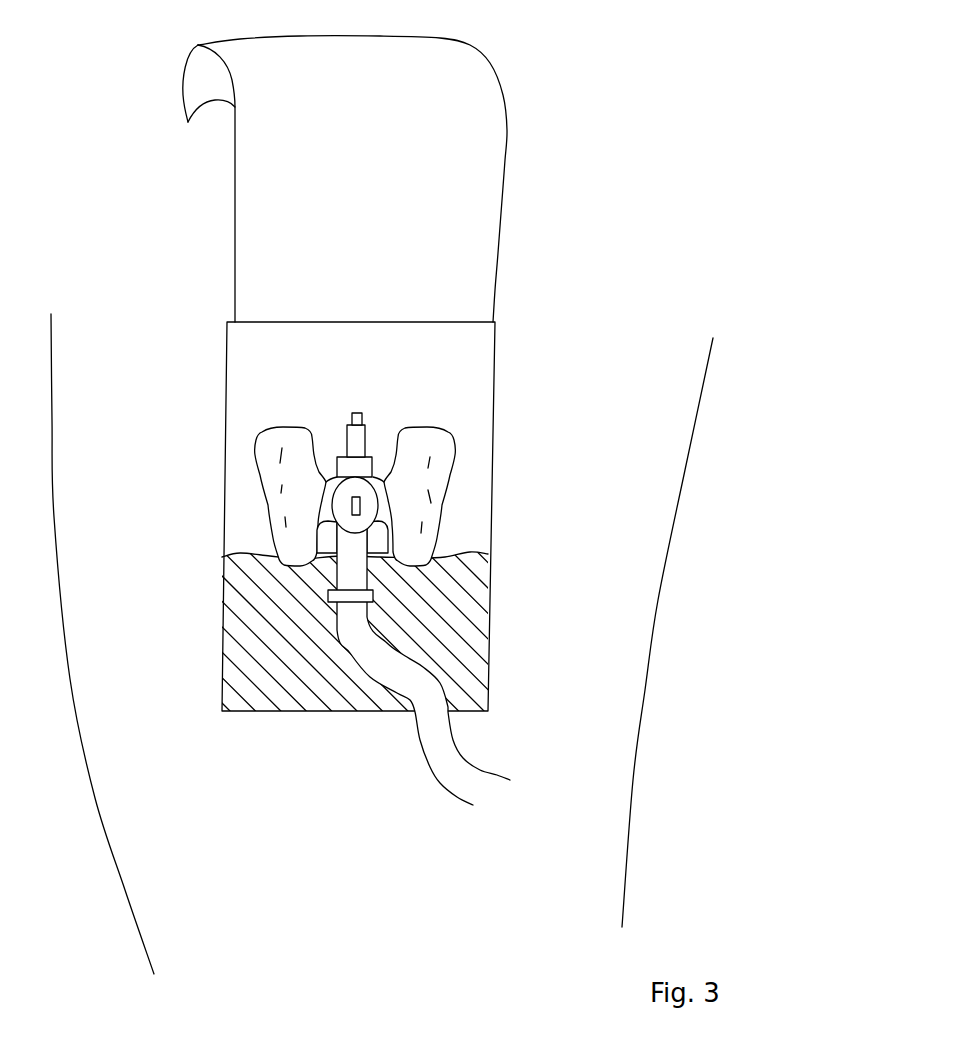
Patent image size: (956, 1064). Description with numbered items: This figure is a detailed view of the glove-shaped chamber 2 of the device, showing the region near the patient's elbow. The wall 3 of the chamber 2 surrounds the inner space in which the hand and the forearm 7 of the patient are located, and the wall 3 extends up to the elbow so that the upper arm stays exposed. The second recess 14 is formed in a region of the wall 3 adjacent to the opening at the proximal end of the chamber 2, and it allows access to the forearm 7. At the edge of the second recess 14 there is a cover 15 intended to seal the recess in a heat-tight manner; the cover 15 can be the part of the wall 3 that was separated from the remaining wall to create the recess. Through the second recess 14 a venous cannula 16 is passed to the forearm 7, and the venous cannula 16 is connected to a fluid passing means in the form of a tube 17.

The chamber 2 is at (625, 848).
The wall 3 is at (585, 588).
The forearm 7 is at (380, 390).
The second recess 14 is at (457, 378).
The cover 15 is at (483, 110).
The venous cannula 16 is at (287, 503).
The tube 17 is at (460, 778).